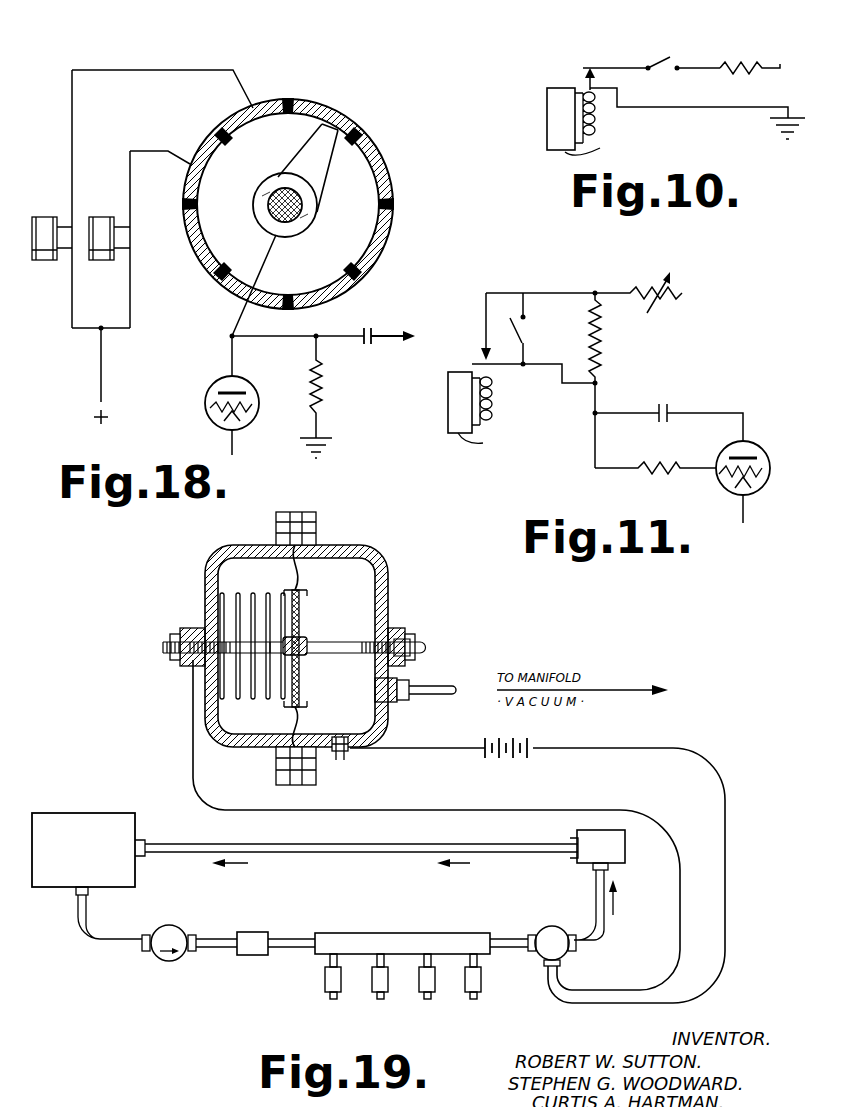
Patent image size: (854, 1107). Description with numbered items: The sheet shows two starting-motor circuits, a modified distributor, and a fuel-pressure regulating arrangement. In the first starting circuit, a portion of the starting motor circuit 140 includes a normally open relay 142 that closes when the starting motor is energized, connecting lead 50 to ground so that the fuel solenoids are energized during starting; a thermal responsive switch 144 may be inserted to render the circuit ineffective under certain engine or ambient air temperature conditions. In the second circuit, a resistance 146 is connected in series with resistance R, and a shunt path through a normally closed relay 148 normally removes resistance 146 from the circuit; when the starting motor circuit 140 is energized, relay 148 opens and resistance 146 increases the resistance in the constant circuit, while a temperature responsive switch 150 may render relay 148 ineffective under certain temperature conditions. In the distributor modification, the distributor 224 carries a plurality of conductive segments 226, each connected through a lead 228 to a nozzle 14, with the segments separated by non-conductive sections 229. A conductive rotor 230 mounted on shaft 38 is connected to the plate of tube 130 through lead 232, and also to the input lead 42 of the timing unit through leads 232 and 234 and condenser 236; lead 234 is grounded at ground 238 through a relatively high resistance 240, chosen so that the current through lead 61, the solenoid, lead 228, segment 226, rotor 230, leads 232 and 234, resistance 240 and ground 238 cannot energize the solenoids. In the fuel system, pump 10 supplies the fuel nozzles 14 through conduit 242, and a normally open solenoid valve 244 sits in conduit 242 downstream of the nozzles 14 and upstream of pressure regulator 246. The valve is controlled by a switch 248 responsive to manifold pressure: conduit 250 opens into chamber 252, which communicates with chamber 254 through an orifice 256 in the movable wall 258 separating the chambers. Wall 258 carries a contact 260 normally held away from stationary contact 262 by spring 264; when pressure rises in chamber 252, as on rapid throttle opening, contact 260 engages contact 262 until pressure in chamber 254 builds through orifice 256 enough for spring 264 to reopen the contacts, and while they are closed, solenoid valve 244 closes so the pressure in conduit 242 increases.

In FIG. 19, the pump 10 is at (168, 924).
In FIG. 18, the nozzle 14 is at (40, 225).
In FIG. 19, the nozzle 14 is at (372, 983).
In FIG. 18, the shaft 38 is at (288, 222).
In FIG. 18, the input lead 42 is at (383, 345).
In FIG. 10, the lead 50 is at (770, 68).
In FIG. 18, the lead 61 is at (101, 370).
In FIG. 18, the tube 130 is at (222, 383).
In FIG. 10, the starting motor circuit 140 is at (558, 122).
In FIG. 11, the starting motor circuit 140 is at (453, 403).
In FIG. 10, the normally open relay 142 is at (578, 80).
In FIG. 10, the thermal responsive switch 144 is at (648, 62).
In FIG. 11, the resistance 146 is at (598, 334).
In FIG. 11, the normally closed relay 148 is at (470, 348).
In FIG. 11, the temperature responsive switch 150 is at (527, 332).
In FIG. 11, the resistance R is at (641, 288).
In FIG. 18, the distributor 224 is at (347, 108).
In FIG. 18, the conductive segment 226 is at (257, 107).
In FIG. 18, the lead 228 is at (150, 70).
In FIG. 18, the non-conductive section 229 is at (363, 128).
In FIG. 18, the conductive rotor 230 is at (306, 143).
In FIG. 18, the lead 232 is at (232, 357).
In FIG. 18, the lead 234 is at (298, 336).
In FIG. 18, the condenser 236 is at (377, 328).
In FIG. 18, the ground 238 is at (317, 428).
In FIG. 18, the resistance 240 is at (320, 388).
In FIG. 19, the conduit 242 is at (222, 942).
In FIG. 19, the solenoid valve 244 is at (542, 928).
In FIG. 19, the pressure regulator 246 is at (590, 854).
In FIG. 19, the switch 248 is at (408, 545).
In FIG. 19, the conduit 250 is at (438, 690).
In FIG. 19, the chamber 252 is at (360, 582).
In FIG. 19, the chamber 254 is at (253, 578).
In FIG. 19, the orifice 256 is at (300, 622).
In FIG. 19, the movable wall 258 is at (280, 710).
In FIG. 19, the contact 260 is at (305, 656).
In FIG. 19, the stationary contact 262 is at (240, 645).
In FIG. 19, the spring 264 is at (228, 688).